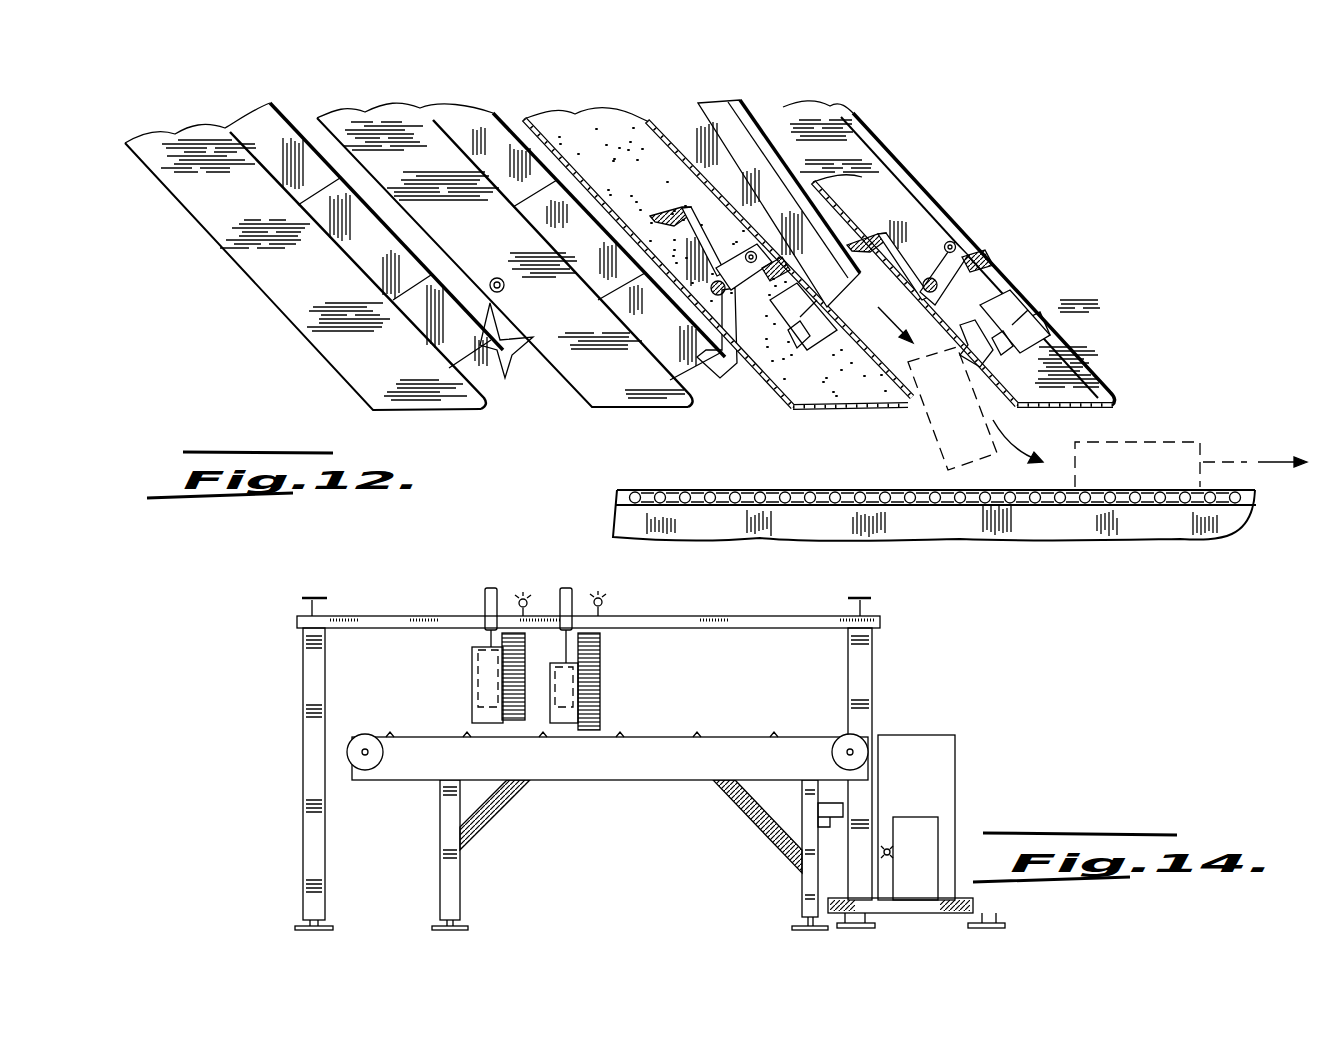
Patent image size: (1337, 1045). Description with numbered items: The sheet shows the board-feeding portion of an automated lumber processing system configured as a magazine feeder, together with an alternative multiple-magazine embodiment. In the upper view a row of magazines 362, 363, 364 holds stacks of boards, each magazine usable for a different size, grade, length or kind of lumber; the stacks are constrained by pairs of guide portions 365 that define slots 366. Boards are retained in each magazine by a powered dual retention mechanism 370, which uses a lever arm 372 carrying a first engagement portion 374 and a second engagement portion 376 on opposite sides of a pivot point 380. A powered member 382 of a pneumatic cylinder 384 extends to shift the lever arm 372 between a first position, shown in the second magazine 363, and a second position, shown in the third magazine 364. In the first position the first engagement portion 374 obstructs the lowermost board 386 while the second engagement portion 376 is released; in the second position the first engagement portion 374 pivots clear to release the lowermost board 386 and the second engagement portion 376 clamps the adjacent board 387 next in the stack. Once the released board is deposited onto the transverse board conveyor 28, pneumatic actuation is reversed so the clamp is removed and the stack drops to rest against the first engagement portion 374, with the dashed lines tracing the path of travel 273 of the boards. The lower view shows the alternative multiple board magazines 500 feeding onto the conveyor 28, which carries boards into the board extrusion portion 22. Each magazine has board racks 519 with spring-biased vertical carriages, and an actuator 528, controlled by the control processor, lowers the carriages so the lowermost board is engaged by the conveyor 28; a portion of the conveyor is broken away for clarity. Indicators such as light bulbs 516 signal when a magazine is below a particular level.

In FIG. 12, the magazine 362 is at (345, 157).
In FIG. 12, the guide portions 365 is at (270, 203).
In FIG. 12, the second magazine 363 is at (517, 118).
In FIG. 12, the slots 366 is at (723, 118).
In FIG. 12, the third magazine 364 is at (787, 100).
In FIG. 12, the pneumatic cylinder 384 is at (830, 263).
In FIG. 12, the second engagement portion 376 is at (893, 203).
In FIG. 12, the powered dual retention mechanism 370 is at (947, 283).
In FIG. 12, the powered member 382 is at (955, 283).
In FIG. 12, the pivot point 380 is at (968, 290).
In FIG. 12, the lever arm 372 is at (997, 307).
In FIG. 12, the first engagement portion 374 is at (993, 363).
In FIG. 12, the lowermost board 386 is at (437, 317).
In FIG. 12, the adjacent board 387 is at (367, 240).
In FIG. 12, the path of travel 273 is at (1249, 452).
In FIG. 14, the board racks 519 is at (478, 668).
In FIG. 14, the actuator 528 is at (593, 647).
In FIG. 14, the light bulbs 516 is at (605, 602).
In FIG. 14, the multiple board magazines 500 is at (635, 612).
In FIG. 14, the transverse board conveyor 28 is at (742, 730).
In FIG. 14, the board extrusion portion 22 is at (927, 779).